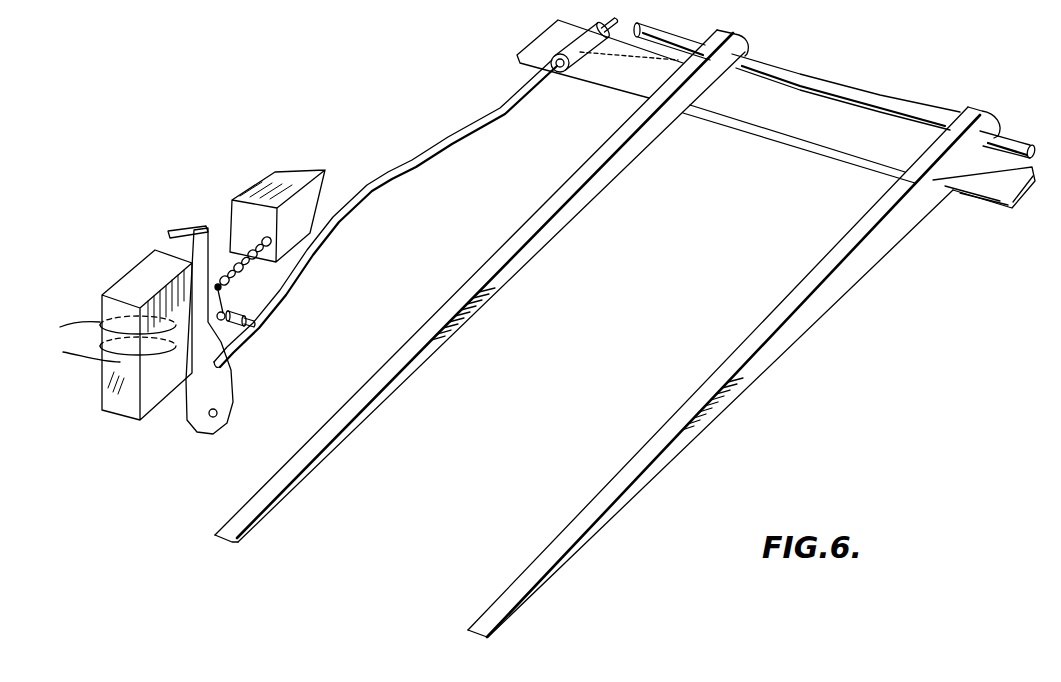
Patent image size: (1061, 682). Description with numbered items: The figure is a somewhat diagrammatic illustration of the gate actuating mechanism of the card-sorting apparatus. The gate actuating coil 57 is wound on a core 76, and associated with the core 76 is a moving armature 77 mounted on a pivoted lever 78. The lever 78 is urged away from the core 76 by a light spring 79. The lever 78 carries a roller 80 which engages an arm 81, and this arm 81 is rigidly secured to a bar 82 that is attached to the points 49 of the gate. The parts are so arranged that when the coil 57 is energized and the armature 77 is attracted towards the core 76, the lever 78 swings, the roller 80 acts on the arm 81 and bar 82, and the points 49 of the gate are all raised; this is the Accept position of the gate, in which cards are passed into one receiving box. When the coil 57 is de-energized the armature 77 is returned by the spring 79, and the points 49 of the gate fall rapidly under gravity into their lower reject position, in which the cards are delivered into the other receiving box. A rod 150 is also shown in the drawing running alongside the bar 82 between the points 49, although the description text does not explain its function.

The points 49 is at (556, 228).
The rod 150 is at (817, 81).
The bar 82 is at (757, 120).
The arm 81 is at (377, 183).
The light spring 79 is at (217, 284).
The roller 80 is at (237, 330).
The pivoted lever 78 is at (214, 397).
The moving armature 77 is at (173, 233).
The core 76 is at (134, 281).
The gate actuating coil 57 is at (110, 337).